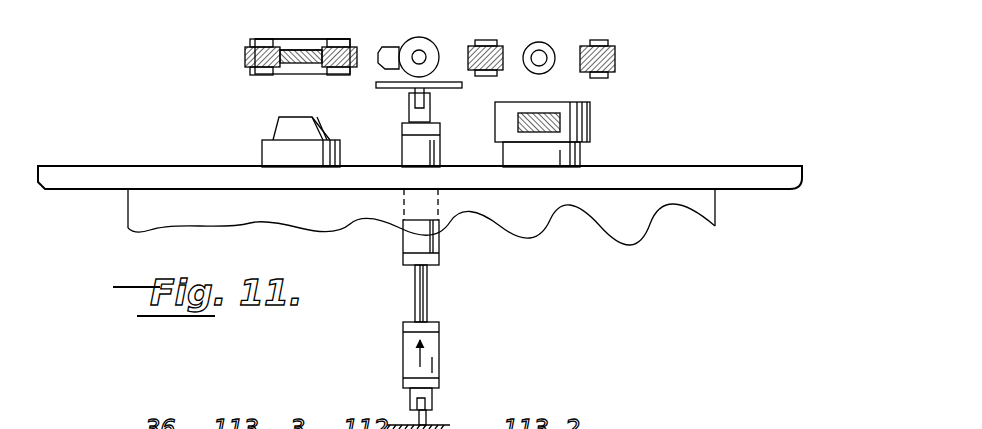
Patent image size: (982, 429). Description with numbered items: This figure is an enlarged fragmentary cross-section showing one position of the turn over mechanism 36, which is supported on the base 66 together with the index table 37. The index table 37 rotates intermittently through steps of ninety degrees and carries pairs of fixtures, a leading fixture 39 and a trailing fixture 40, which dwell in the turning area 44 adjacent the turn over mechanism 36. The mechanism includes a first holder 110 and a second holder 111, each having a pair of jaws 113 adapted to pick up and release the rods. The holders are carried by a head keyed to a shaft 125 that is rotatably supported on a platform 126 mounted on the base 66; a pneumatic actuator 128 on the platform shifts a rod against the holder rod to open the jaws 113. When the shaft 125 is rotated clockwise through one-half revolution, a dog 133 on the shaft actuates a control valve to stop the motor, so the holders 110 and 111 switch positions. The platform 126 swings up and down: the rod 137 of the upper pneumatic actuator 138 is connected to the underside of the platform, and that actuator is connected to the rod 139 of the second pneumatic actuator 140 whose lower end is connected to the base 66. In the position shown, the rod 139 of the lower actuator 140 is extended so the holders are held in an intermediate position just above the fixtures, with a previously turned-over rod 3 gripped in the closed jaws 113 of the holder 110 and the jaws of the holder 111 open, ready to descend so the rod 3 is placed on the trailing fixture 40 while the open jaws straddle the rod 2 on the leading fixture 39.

The rod 2 is at (590, 128).
The rod 3 is at (296, 67).
The turn over mechanism 36 is at (223, 88).
The index table 37 is at (108, 160).
The leading fixture 39 is at (590, 160).
The trailing fixture 40 is at (260, 158).
The turning area 44 is at (475, 127).
The base 66 is at (437, 424).
The first holder 110 is at (243, 48).
The second holder 111 is at (630, 50).
The jaws 113 is at (250, 66).
The shaft 125 is at (421, 55).
The platform 126 is at (405, 90).
The pneumatic actuator 128 is at (570, 41).
The dog 133 is at (381, 48).
The rod 137 is at (412, 112).
The pneumatic actuator 138 is at (440, 240).
The rod 139 is at (428, 290).
The second pneumatic actuator 140 is at (440, 343).